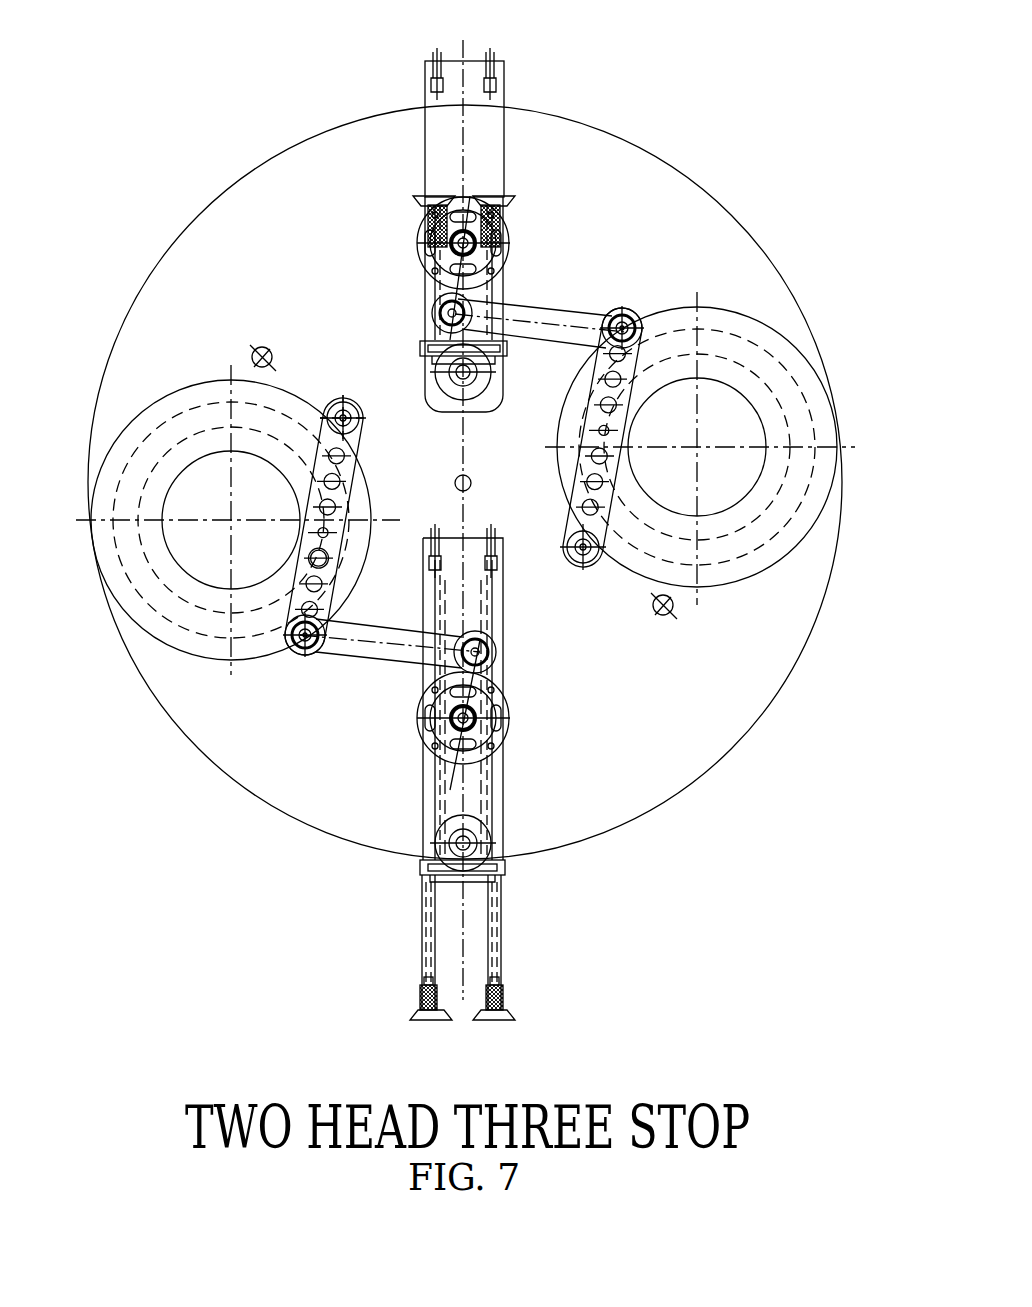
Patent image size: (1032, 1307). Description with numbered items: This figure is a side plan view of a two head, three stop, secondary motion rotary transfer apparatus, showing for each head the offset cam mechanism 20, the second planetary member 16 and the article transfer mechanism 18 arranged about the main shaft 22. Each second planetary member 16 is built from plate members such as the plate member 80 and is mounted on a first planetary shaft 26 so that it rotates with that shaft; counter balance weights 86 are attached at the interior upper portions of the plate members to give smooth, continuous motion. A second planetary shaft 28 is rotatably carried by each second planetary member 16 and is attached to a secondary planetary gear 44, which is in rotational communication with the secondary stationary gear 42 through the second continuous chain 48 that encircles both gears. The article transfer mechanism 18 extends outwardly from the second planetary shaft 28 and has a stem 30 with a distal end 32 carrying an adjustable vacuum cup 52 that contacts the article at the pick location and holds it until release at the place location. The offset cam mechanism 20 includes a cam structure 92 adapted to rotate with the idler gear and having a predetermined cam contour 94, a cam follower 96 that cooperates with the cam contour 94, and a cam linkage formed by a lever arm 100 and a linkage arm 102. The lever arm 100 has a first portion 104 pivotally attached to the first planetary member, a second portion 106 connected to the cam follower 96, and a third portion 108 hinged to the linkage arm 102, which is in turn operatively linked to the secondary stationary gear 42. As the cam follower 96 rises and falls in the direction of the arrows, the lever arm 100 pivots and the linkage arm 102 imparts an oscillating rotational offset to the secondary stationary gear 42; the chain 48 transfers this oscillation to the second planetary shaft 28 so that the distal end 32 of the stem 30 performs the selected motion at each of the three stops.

The second planetary member 16 is at (425, 158).
The article transfer mechanism 18 is at (403, 285).
The offset cam mechanism 20 is at (639, 181).
The main shaft 22 is at (470, 478).
The first planetary shaft 26 is at (438, 240).
The second planetary shaft 28 is at (432, 375).
The stem 30 is at (490, 295).
The distal end 32 is at (500, 1000).
The secondary stationary gear 42 is at (500, 240).
The secondary planetary gear 44 is at (492, 377).
The second continuous chain 48 is at (430, 790).
The adjustable vacuum cup 52 is at (490, 196).
The plate member 80 is at (476, 149).
The counter balance weight 86 is at (462, 62).
The cam structure 92 is at (800, 345).
The cam contour 94 is at (276, 413).
The cam follower 96 is at (598, 428).
The lever arm 100 is at (345, 495).
The linkage arm 102 is at (563, 312).
The first portion 104 is at (366, 439).
The second portion 106 is at (348, 563).
The third portion 108 is at (632, 318).